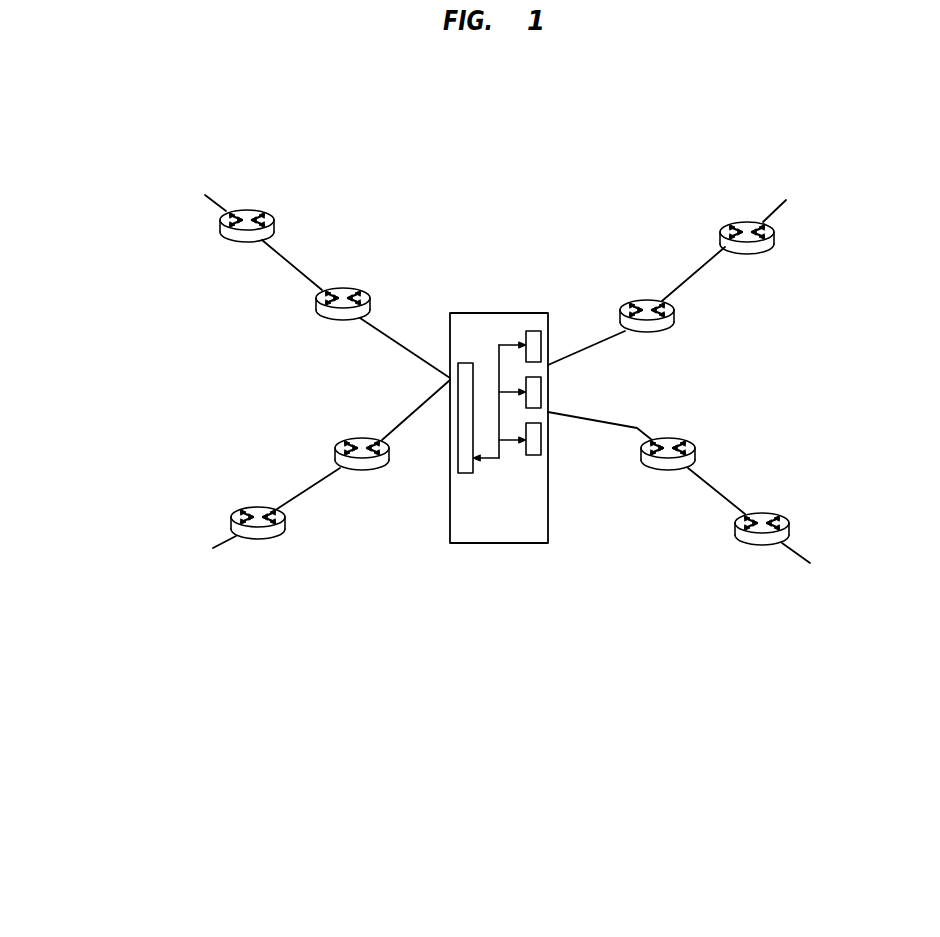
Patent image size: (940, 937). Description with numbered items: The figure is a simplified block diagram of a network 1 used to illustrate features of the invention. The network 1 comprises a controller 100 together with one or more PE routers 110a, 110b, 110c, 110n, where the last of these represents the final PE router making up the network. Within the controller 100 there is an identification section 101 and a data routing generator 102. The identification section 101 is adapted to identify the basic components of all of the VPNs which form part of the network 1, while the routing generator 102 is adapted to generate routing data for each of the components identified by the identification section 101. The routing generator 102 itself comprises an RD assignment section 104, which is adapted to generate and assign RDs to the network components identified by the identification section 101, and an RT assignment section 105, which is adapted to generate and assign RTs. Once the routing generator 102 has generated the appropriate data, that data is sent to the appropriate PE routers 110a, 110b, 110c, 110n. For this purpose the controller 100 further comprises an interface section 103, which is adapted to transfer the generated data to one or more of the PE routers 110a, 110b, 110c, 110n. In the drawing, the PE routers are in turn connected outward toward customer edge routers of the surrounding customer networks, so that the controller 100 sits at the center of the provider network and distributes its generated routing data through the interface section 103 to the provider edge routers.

The network 1 is at (450, 187).
The controller 100 is at (467, 546).
The identification section 101 is at (527, 340).
The data routing generator 102 is at (521, 405).
The interface section 103 is at (473, 362).
The RD assignment section 104 is at (541, 396).
The RT assignment section 105 is at (541, 443).
The PE router 110a is at (345, 288).
The PE router 110b is at (362, 438).
The provider edge router 110c is at (668, 438).
The PE router 110n is at (648, 300).